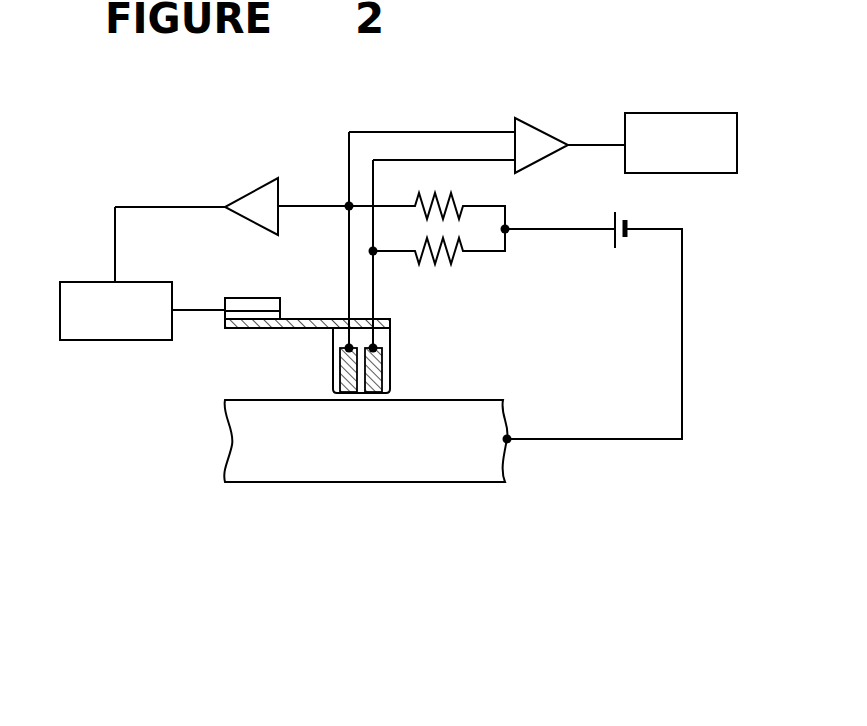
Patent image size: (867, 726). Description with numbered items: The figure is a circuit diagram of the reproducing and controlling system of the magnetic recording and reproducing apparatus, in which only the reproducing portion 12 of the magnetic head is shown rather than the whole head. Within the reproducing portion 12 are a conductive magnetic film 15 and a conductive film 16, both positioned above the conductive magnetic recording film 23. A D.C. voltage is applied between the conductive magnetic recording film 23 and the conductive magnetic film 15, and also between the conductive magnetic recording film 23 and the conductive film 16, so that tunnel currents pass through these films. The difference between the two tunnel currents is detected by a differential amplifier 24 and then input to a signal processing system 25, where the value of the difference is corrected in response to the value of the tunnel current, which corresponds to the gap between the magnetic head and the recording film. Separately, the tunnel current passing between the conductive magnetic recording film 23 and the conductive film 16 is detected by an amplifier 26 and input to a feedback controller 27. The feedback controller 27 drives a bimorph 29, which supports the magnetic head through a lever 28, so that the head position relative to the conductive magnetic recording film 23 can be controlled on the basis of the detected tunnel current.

The reproducing portion 12 is at (383, 385).
The conductive magnetic film 15 is at (380, 360).
The conductive film 16 is at (347, 375).
The conductive magnetic recording film 23 is at (387, 453).
The differential amplifier 24 is at (537, 142).
The signal processing system 25 is at (683, 133).
The amplifier 26 is at (257, 200).
The feedback controller 27 is at (85, 288).
The lever 28 is at (322, 320).
The bimorph 29 is at (250, 302).